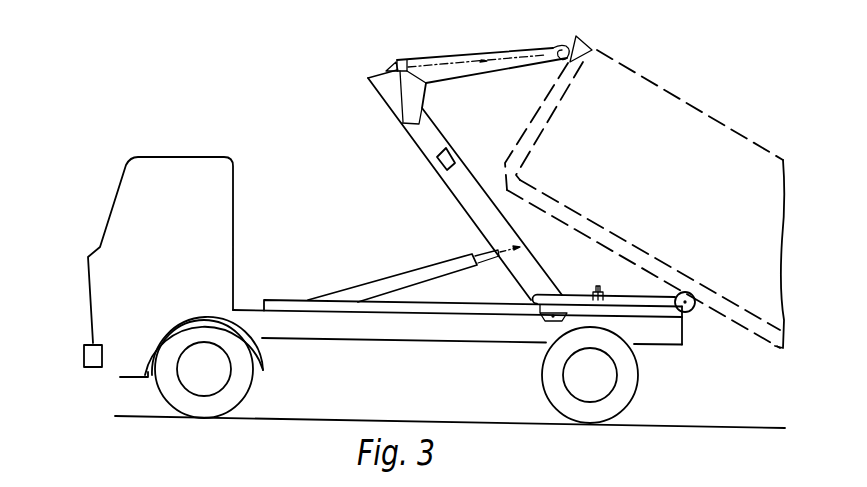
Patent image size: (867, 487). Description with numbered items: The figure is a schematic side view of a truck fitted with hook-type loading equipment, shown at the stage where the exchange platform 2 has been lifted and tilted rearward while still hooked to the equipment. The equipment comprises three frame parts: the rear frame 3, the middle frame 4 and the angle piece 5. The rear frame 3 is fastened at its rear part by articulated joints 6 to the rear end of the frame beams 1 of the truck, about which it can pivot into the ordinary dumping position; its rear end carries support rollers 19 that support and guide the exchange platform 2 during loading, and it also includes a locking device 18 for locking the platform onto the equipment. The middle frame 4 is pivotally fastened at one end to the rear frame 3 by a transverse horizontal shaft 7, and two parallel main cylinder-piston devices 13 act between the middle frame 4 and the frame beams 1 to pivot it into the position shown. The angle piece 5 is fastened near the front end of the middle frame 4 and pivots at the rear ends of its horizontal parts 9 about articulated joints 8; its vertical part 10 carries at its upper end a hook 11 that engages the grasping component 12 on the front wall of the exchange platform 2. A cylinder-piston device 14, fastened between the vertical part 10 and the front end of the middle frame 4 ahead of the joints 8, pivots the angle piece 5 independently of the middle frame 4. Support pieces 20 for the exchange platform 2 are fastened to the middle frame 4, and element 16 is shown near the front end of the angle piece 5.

The frame beams 1 is at (430, 328).
The exchange platform 2 is at (644, 199).
The rear frame 3 is at (628, 300).
The middle frame 4 is at (453, 192).
The angle piece 5 is at (443, 53).
The articulated joints 6 is at (672, 313).
The transverse horizontal shaft 7 is at (548, 316).
The articulated joints 8 is at (410, 118).
The horizontal parts 9 is at (407, 85).
The vertical part 10 is at (507, 63).
The hook 11 is at (553, 47).
The grasping component 12 is at (592, 50).
The main cylinder-piston devices 13 is at (398, 280).
The cylinder-piston device 14 is at (405, 62).
The locking member 16 is at (385, 68).
The locking device 18 is at (595, 290).
The support rollers 19 is at (693, 297).
The support pieces 20 is at (443, 158).